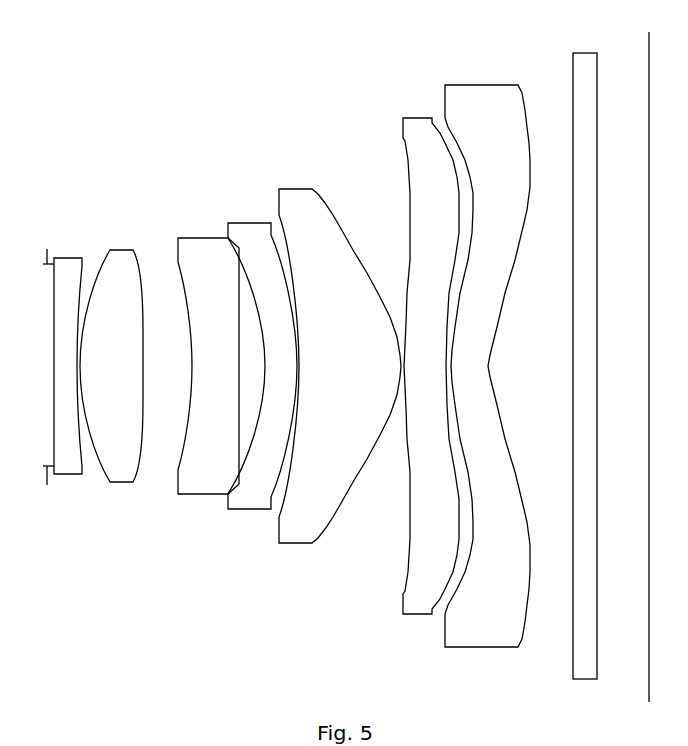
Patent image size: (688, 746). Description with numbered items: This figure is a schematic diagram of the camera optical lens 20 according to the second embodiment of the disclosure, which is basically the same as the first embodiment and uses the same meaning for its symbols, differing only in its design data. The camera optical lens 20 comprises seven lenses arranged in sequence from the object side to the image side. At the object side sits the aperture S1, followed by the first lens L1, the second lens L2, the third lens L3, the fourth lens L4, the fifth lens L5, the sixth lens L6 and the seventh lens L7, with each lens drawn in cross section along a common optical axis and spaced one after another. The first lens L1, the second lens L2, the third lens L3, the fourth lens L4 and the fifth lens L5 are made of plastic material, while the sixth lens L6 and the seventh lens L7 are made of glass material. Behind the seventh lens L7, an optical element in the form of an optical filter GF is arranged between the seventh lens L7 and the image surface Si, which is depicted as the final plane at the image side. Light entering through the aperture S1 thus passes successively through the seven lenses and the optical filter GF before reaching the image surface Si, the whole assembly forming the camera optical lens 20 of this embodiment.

The camera optical lens 20 is at (281, 331).
The aperture S1 is at (43, 352).
The first lens L1 is at (68, 347).
The second lens L2 is at (111, 348).
The third lens L3 is at (208, 352).
The fourth lens L4 is at (262, 353).
The fifth lens L5 is at (340, 349).
The sixth lens L6 is at (428, 348).
The seventh lens L7 is at (487, 352).
The optical filter GF is at (580, 353).
The image surface Si is at (639, 356).